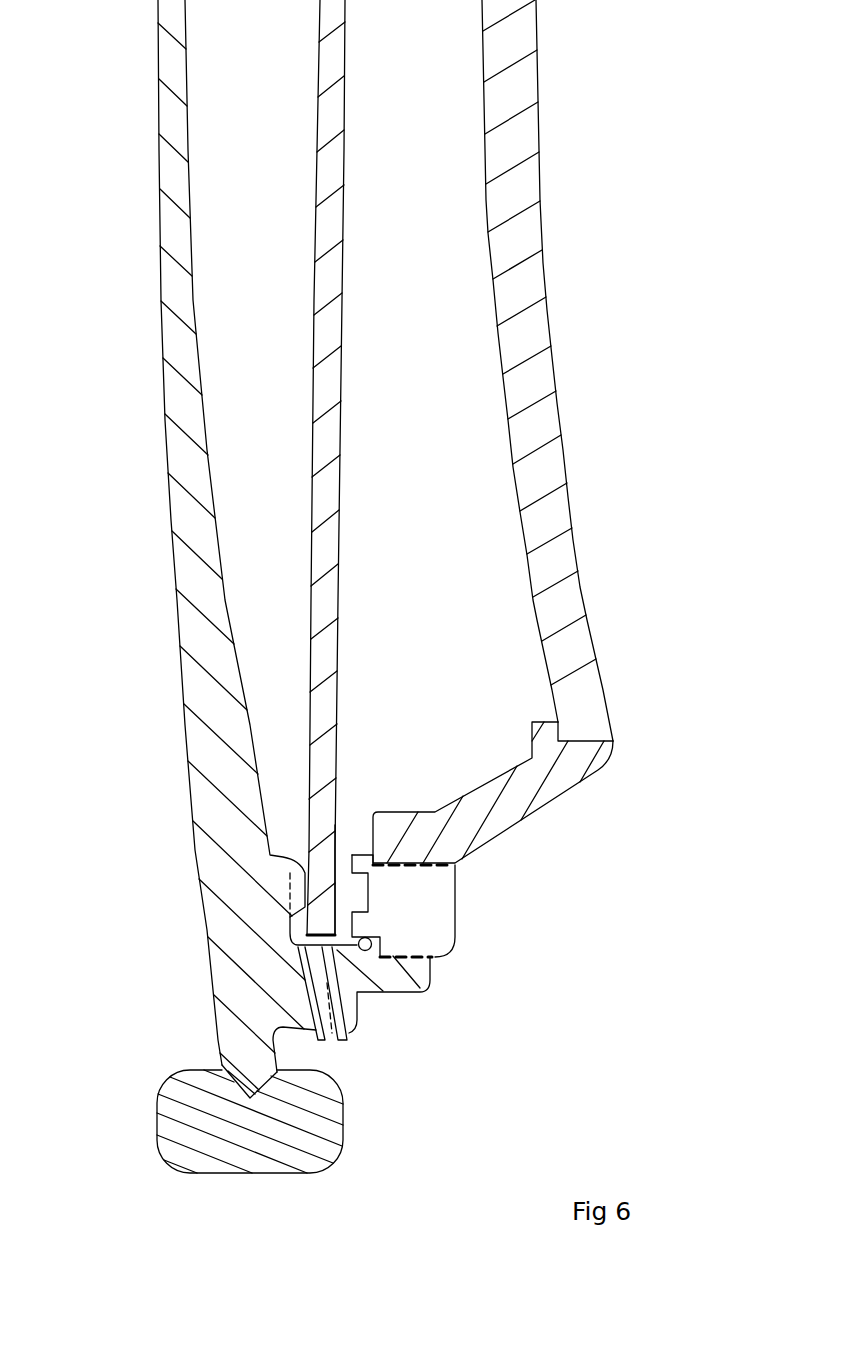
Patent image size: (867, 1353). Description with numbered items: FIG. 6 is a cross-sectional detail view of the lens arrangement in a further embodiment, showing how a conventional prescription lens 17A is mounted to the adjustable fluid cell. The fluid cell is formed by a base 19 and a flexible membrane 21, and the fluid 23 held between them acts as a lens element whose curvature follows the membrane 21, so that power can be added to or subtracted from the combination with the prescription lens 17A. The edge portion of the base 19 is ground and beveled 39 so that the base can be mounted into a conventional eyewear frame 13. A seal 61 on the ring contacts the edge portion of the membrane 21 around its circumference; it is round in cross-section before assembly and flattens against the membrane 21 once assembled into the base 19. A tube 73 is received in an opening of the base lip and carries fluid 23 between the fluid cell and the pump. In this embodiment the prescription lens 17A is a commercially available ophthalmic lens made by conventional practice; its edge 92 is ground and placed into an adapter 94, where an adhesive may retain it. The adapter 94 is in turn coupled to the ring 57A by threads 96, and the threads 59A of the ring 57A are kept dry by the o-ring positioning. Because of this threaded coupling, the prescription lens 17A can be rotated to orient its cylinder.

The frame 13 is at (177, 1118).
The prescription lens 17A is at (565, 630).
The base 19 is at (185, 455).
The membrane 21 is at (338, 615).
The fluid 23 is at (302, 432).
The bevel 39 is at (263, 1083).
The ring 57A is at (422, 903).
The threads 59A is at (413, 960).
The seal 61 is at (334, 837).
The tube 73 is at (338, 1045).
The edge 92 is at (593, 738).
The adapter 94 is at (525, 797).
The threads 96 is at (455, 867).